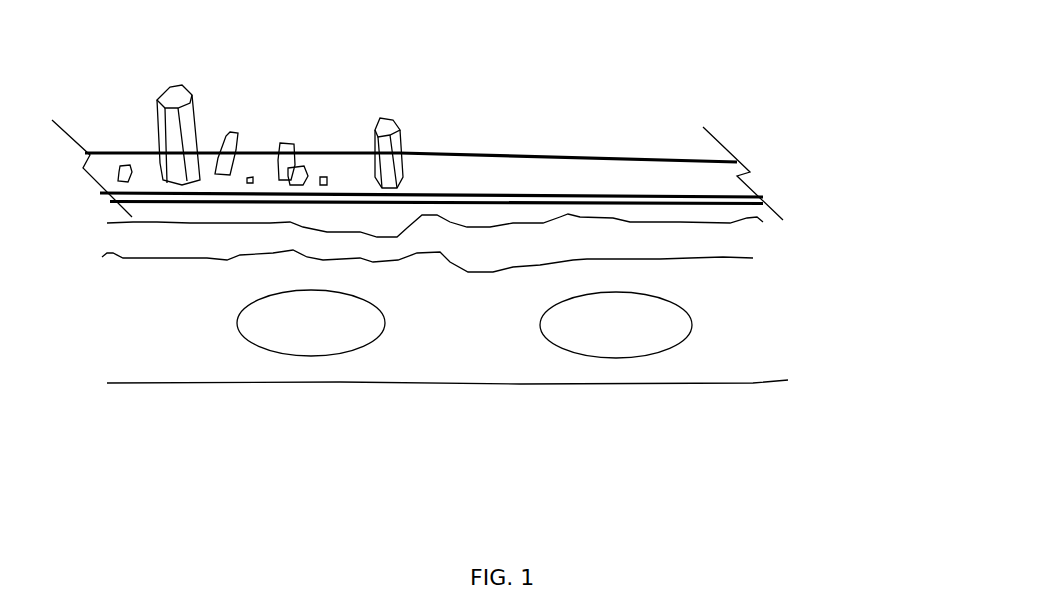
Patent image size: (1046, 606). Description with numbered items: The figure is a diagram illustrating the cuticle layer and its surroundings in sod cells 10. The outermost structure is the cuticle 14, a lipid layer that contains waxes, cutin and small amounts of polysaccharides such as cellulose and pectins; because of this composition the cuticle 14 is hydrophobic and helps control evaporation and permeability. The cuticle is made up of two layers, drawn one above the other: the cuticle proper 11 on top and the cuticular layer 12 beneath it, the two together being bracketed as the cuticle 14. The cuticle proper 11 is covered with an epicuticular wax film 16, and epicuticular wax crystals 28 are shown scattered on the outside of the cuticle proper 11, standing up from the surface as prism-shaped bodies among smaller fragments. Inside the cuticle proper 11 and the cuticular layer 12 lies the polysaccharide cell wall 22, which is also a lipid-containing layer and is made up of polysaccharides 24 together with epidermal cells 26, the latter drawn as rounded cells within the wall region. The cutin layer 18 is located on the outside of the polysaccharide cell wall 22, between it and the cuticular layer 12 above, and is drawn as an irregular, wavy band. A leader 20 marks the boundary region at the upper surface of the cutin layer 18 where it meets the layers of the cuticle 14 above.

The sod cells 10 is at (580, 108).
The cuticle proper 11 is at (804, 152).
The cuticular layer 12 is at (804, 215).
The cuticles 14 is at (906, 150).
The epicuticular wax film 16 is at (480, 177).
The cutin layer 18 is at (88, 202).
The interface surface 20 is at (687, 213).
The polysaccharide cell wall 22 is at (859, 262).
The polysaccharides 24 is at (180, 347).
The epidermal cells 26 is at (598, 358).
The epicuticular wax crystals 28 is at (188, 92).